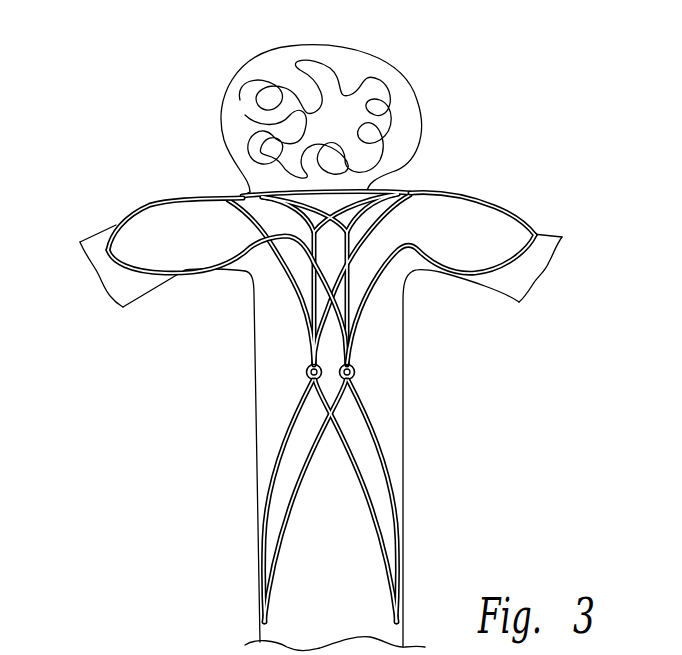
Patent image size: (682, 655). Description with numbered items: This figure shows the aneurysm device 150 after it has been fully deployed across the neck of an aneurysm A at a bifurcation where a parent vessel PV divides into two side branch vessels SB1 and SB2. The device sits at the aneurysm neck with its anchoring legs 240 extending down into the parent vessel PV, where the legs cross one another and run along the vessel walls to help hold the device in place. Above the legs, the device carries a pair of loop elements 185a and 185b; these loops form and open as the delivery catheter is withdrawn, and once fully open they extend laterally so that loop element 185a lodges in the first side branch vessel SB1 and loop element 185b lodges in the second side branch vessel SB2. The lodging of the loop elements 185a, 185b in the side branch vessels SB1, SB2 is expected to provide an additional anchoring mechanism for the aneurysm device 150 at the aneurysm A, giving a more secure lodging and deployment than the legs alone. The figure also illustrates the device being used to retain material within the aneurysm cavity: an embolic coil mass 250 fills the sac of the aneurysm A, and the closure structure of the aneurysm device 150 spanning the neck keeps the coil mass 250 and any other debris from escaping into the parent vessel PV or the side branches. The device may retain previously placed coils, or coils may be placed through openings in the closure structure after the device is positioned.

The aneurysm device 150 is at (361, 407).
The anchoring legs 240 is at (281, 436).
The embolic coil mass 250 is at (327, 70).
The loop element 185a is at (131, 276).
The loop element 185b is at (534, 283).
The aneurysm A is at (410, 95).
The side branch vessel SB1 is at (98, 242).
The side branch vessel SB2 is at (547, 236).
The parent vessel PV is at (403, 432).